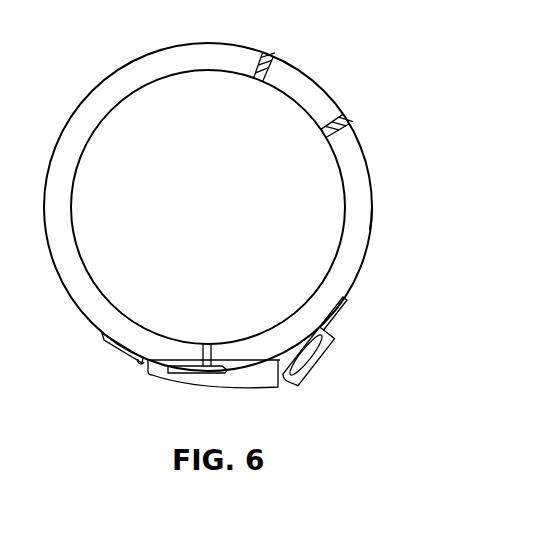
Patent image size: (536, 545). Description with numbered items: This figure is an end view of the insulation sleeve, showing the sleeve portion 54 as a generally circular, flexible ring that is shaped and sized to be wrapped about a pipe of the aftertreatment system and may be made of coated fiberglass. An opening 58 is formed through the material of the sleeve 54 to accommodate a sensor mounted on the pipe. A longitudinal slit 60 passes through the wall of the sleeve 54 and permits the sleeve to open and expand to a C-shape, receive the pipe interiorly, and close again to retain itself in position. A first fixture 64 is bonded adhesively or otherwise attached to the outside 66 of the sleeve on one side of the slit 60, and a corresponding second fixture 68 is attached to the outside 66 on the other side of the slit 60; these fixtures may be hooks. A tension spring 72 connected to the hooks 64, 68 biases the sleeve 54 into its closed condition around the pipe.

The sleeve portion 54 is at (368, 259).
The opening 58 is at (299, 130).
The slit 60 is at (207, 326).
The fixture 64 is at (337, 307).
The outside of the sleeve 66 is at (372, 208).
The second fixture 68 is at (111, 344).
The tension spring 72 is at (263, 388).